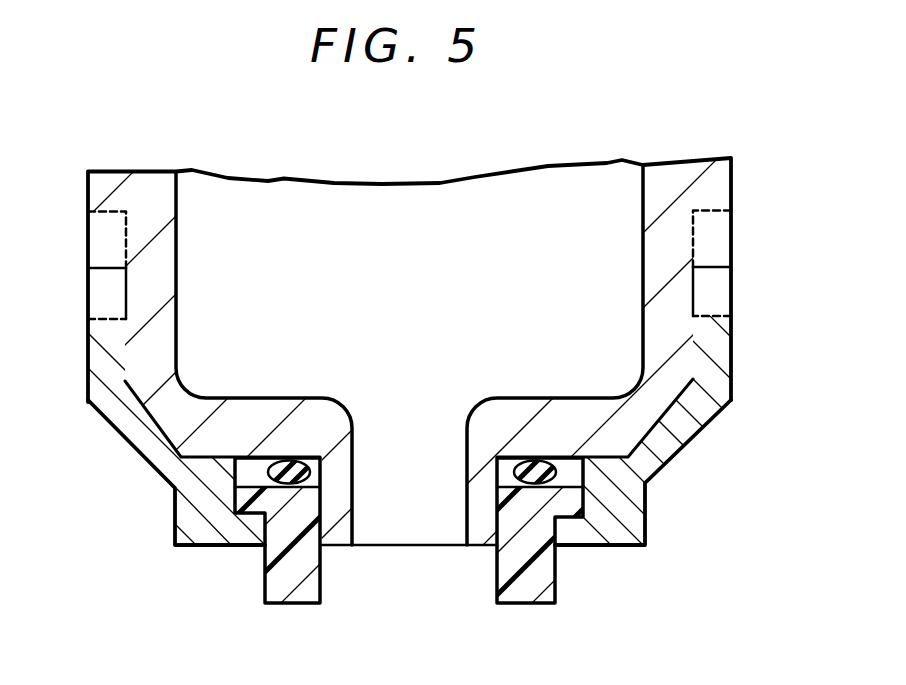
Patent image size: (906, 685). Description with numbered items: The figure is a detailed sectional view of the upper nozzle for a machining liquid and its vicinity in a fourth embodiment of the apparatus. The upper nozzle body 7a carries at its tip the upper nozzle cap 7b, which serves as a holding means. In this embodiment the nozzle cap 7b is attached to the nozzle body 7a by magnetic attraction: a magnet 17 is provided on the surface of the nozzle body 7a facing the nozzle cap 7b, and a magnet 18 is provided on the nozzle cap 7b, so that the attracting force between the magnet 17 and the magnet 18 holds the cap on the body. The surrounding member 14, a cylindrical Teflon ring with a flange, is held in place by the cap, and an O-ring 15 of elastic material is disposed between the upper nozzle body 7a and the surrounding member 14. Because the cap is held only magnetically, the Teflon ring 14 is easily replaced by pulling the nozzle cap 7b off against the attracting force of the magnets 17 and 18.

The upper nozzle body 7a is at (732, 187).
The upper nozzle cap 7b is at (731, 384).
The surrounding member 14 is at (556, 577).
The O-ring 15 is at (542, 459).
The magnet 17 is at (731, 236).
The magnet 18 is at (731, 292).